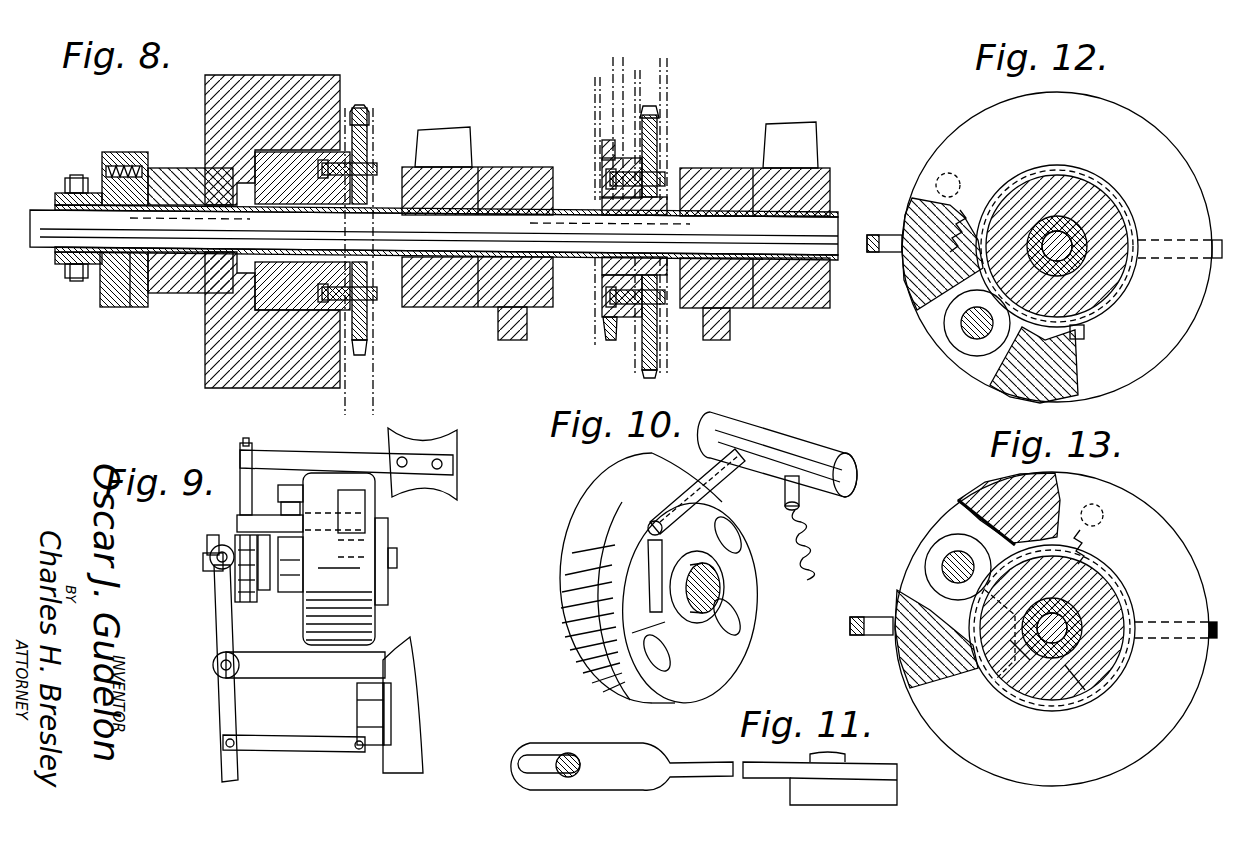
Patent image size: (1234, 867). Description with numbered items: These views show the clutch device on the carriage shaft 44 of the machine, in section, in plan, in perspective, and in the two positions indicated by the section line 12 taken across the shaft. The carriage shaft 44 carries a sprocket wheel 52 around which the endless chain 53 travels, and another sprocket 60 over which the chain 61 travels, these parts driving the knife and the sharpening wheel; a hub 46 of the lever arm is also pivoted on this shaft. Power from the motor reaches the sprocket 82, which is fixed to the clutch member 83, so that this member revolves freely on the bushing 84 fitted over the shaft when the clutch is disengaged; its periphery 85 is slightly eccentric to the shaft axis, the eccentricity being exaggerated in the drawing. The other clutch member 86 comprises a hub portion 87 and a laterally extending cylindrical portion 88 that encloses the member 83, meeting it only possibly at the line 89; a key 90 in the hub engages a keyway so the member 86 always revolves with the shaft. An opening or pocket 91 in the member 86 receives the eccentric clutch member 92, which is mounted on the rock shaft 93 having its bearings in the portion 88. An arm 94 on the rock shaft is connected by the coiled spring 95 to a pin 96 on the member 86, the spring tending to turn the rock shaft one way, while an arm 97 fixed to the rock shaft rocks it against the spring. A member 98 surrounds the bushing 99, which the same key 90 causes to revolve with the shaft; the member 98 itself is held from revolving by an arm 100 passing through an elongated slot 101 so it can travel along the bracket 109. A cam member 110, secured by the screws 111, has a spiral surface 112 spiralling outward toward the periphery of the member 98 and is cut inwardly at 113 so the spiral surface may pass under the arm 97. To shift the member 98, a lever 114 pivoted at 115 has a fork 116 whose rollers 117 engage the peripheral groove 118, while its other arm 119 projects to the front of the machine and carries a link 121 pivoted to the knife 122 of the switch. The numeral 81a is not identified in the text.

In FIG. 8, the section line 12— 12 is at (345, 62).
In FIG. 8, the carriage shaft 44 is at (838, 222).
In FIG. 9, the carriage shaft 44 is at (397, 556).
In FIG. 10, the carriage shaft 44 is at (708, 587).
In FIG. 12, the carriage shaft 44 is at (1080, 262).
In FIG. 13, the carriage shaft 44 is at (1075, 650).
In FIG. 8, the hub 46 is at (460, 180).
In FIG. 8, the sprocket wheel 52 is at (660, 348).
In FIG. 8, the endless chain 53 is at (668, 98).
In FIG. 8, the sprocket 60 is at (602, 143).
In FIG. 8, the chain 61 is at (594, 128).
In FIG. 8, the pin 81a is at (376, 388).
In FIG. 8, the sprocket 82 is at (368, 330).
In FIG. 8, the clutch member 83 is at (268, 285).
In FIG. 12, the clutch member 83 is at (1115, 220).
In FIG. 13, the clutch member 83 is at (1108, 612).
In FIG. 8, the bushing 84 is at (386, 200).
In FIG. 8, the periphery 85 is at (255, 312).
In FIG. 12, the periphery 85 is at (1068, 172).
In FIG. 13, the periphery 85 is at (1120, 660).
In FIG. 8, the clutch member 86 is at (238, 388).
In FIG. 9, the clutch member 86 is at (345, 559).
In FIG. 8, the hub portion 87 is at (166, 294).
In FIG. 8, the cylindrical portion 88 is at (342, 92).
In FIG. 12, the cylindrical portion 88 is at (1044, 247).
In FIG. 13, the cylindrical portion 88 is at (1033, 629).
In FIG. 8, the line 89 is at (178, 168).
In FIG. 8, the key 90 is at (170, 200).
In FIG. 9, the opening or pocket 91 is at (366, 500).
In FIG. 13, the opening or pocket 91 is at (960, 510).
In FIG. 12, the eccentric clutch member 92 is at (958, 335).
In FIG. 13, the eccentric clutch member 92 is at (945, 547).
In FIG. 9, the rock shaft 93 is at (257, 518).
In FIG. 10, the rock shaft 93 is at (785, 432).
In FIG. 12, the rock shaft 93 is at (970, 333).
In FIG. 13, the rock shaft 93 is at (945, 566).
In FIG. 10, the arm 94 is at (800, 500).
In FIG. 10, the coiled spring 95 is at (815, 548).
In FIG. 12, the coiled spring 95 is at (958, 200).
In FIG. 13, the coiled spring 95 is at (1080, 540).
In FIG. 9, the pin 96 is at (285, 485).
In FIG. 12, the pin 96 is at (955, 176).
In FIG. 13, the pin 96 is at (1104, 517).
In FIG. 9, the arm 97 is at (270, 590).
In FIG. 10, the arm 97 is at (705, 483).
In FIG. 12, the arm 97 is at (1085, 338).
In FIG. 13, the arm 97 is at (1000, 655).
In FIG. 8, the member 98 is at (112, 152).
In FIG. 9, the member 98 is at (249, 603).
In FIG. 10, the member 98 is at (641, 578).
In FIG. 8, the bushing 99 is at (60, 252).
In FIG. 9, the arm 100 is at (232, 476).
In FIG. 11, the arm 100 is at (575, 758).
In FIG. 11, the slot 101 is at (537, 762).
In FIG. 9, the bracket 109 is at (336, 455).
In FIG. 11, the bracket 109 is at (658, 753).
In FIG. 8, the cam member 110 is at (138, 307).
In FIG. 10, the cam member 110 is at (690, 603).
In FIG. 10, the screws 111 is at (658, 662).
In FIG. 10, the spiral surface 112 is at (665, 555).
In FIG. 13, the spiral surface 112 is at (1025, 660).
In FIG. 10, the cut 113 is at (655, 612).
In FIG. 13, the cut 113 is at (1065, 695).
In FIG. 9, the lever 114 is at (218, 694).
In FIG. 9, the pivot 115 is at (214, 661).
In FIG. 8, the fork 116 is at (90, 272).
In FIG. 9, the fork 116 is at (220, 570).
In FIG. 8, the rollers 117 is at (68, 278).
In FIG. 9, the rollers 117 is at (205, 562).
In FIG. 8, the peripheral groove 118 is at (65, 185).
In FIG. 9, the peripheral groove 118 is at (210, 540).
In FIG. 9, the arm 119 is at (240, 760).
In FIG. 9, the link 121 is at (294, 735).
In FIG. 9, the knife 122 is at (358, 710).